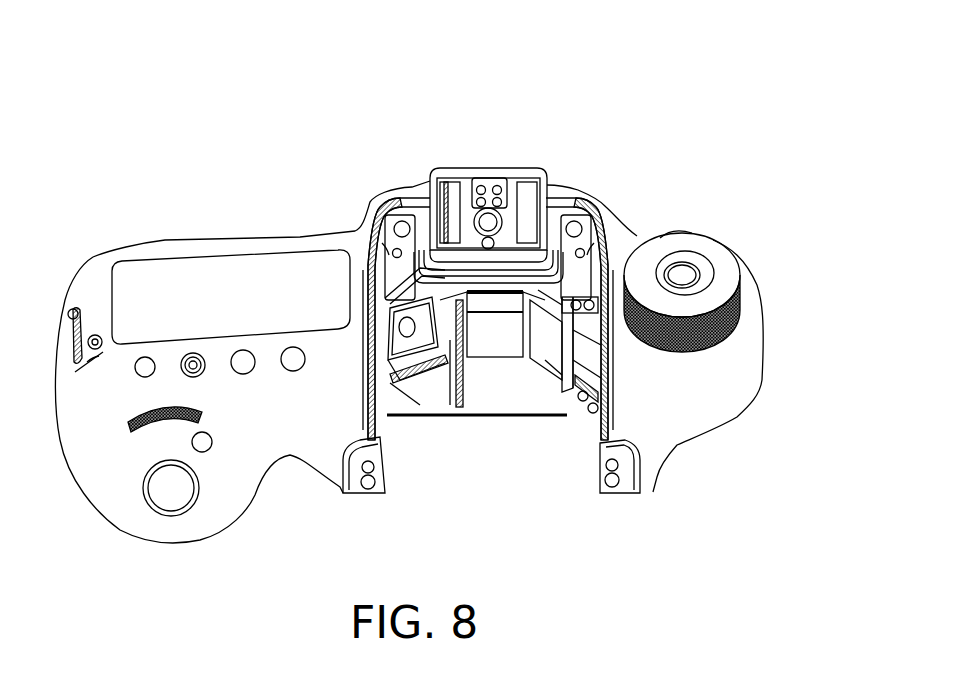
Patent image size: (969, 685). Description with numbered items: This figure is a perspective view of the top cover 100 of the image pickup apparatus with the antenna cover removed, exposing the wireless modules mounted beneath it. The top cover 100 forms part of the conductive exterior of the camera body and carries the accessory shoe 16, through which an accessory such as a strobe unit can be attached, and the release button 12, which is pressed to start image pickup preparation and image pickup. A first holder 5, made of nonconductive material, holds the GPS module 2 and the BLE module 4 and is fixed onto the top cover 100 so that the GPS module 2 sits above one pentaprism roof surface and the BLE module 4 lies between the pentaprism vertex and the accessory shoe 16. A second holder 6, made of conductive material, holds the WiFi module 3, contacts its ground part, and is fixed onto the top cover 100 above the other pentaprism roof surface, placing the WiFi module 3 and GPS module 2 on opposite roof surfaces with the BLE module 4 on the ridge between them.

The top cover 100 is at (95, 282).
The release button 12 is at (170, 488).
The accessory shoe 16 is at (543, 210).
The second holder 6 is at (615, 345).
The GPS module 2 is at (337, 452).
The WiFi module 3 is at (655, 490).
The first holder 5 is at (463, 313).
The BLE module 4 is at (497, 300).